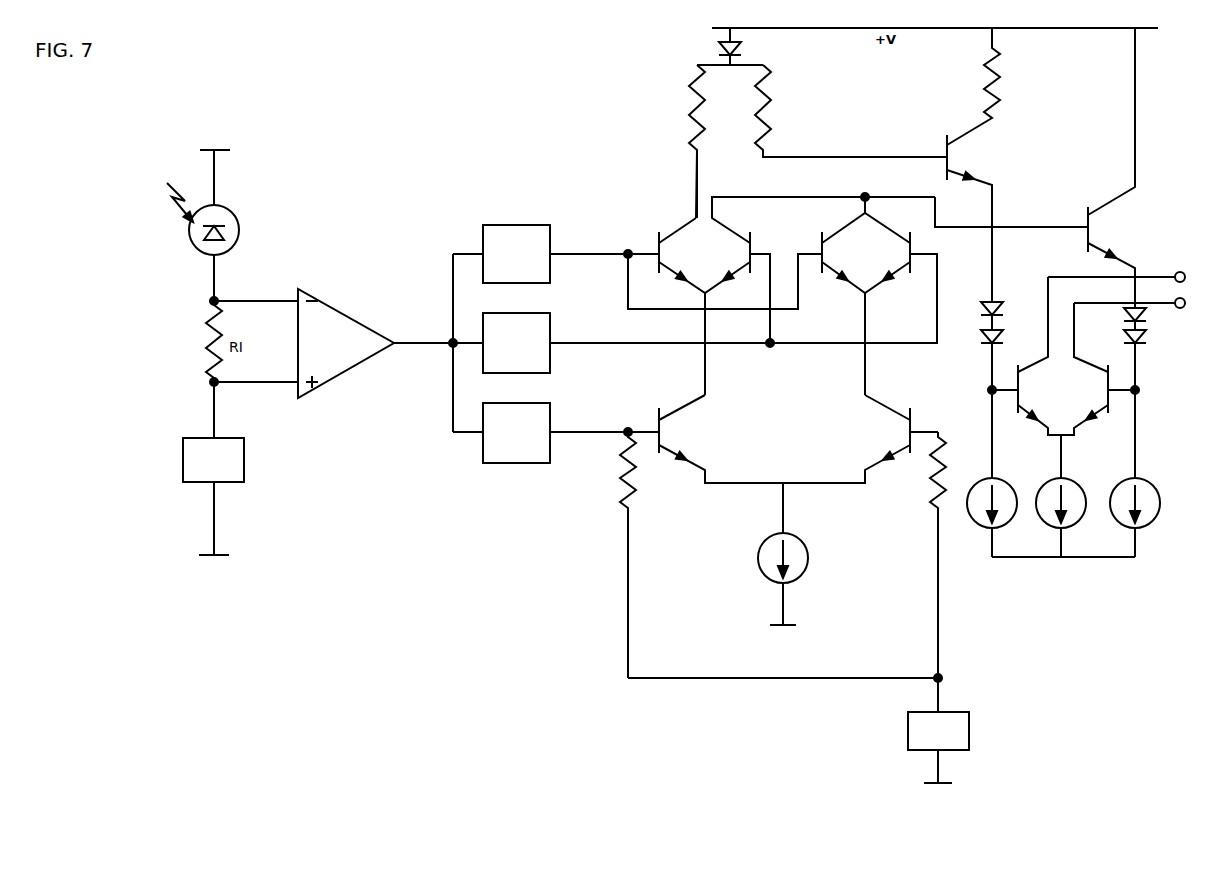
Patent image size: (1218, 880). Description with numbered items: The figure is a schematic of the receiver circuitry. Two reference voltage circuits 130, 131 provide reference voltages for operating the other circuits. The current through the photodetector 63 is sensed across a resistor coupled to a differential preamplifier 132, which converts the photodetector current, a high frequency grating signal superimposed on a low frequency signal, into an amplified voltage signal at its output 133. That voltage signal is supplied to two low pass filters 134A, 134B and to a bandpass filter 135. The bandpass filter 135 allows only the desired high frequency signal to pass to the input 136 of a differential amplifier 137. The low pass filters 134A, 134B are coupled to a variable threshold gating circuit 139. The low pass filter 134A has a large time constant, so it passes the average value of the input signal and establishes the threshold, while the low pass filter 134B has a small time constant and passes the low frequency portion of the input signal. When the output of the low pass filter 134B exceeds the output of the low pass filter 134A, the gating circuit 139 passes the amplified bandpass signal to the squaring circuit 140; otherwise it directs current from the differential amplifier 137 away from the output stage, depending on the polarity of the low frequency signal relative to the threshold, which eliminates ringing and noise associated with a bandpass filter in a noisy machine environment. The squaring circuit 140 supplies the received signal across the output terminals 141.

The photodetector 63 is at (239, 232).
The reference voltage circuit 130 is at (244, 460).
The reference voltage circuit 131 is at (969, 730).
The preamplifier 132 is at (371, 328).
The output 133 is at (401, 343).
The low pass filter 134A is at (524, 223).
The low pass filter 134B is at (550, 318).
The bandpass filter 135 is at (521, 463).
The input 136 is at (588, 430).
The differential amplifier 137 is at (798, 470).
The variable threshold gating circuit 139 is at (812, 195).
The squaring circuit 140 is at (1076, 398).
The output terminals 141 is at (1213, 300).